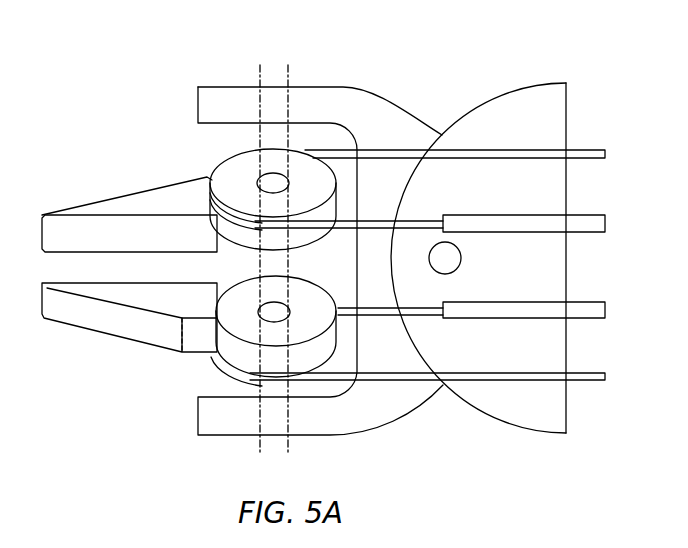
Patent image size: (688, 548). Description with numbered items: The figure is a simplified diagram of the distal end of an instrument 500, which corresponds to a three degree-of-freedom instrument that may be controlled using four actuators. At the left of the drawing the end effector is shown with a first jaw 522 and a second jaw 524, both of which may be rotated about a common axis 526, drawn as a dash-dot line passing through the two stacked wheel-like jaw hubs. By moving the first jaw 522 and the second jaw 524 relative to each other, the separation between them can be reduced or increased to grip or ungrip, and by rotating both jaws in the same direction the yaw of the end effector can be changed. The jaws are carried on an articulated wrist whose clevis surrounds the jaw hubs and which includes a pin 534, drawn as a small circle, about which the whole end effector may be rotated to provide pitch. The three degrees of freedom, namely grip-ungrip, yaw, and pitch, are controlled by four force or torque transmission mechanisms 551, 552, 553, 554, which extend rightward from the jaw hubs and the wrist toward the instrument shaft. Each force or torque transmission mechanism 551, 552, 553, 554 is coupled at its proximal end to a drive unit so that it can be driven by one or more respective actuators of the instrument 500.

The instrument 500 is at (119, 57).
The first jaw 522 is at (112, 327).
The second jaw 524 is at (140, 197).
The axis 526 is at (274, 56).
The pin 534 is at (462, 258).
The force or torque transmission mechanism 551 is at (533, 383).
The force or torque transmission mechanism 552 is at (428, 318).
The force or torque transmission mechanism 553 is at (423, 223).
The force or torque transmission mechanism 554 is at (470, 150).